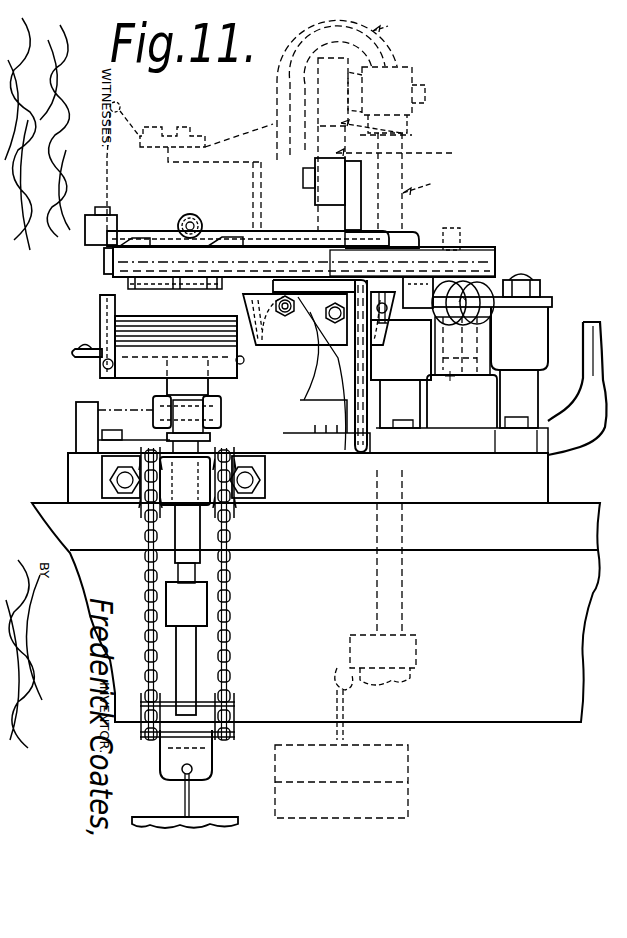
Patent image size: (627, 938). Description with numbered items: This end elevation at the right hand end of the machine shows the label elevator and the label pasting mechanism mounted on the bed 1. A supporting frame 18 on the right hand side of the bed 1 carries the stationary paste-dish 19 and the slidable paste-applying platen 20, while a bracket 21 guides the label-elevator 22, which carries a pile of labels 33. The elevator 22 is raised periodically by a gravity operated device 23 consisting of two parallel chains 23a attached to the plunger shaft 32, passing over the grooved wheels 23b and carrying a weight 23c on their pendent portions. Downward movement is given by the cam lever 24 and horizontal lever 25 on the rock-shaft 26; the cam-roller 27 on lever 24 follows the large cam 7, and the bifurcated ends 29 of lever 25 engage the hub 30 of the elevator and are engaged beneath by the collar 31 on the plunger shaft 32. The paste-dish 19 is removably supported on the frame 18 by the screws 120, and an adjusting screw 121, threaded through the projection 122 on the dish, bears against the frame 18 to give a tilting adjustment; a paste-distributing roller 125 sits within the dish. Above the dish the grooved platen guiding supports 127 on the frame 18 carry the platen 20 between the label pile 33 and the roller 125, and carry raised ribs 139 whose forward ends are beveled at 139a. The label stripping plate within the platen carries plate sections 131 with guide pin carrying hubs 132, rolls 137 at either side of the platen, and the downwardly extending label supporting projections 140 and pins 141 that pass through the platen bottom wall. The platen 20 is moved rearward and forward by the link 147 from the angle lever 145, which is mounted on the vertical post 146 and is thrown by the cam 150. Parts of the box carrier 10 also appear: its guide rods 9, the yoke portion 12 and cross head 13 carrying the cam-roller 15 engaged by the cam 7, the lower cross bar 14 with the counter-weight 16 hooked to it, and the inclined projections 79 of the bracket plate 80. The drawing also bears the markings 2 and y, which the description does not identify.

The bed 1 is at (308, 451).
The foundation slab 2 is at (558, 555).
The large cam 7 is at (403, 154).
The guide rods 9 is at (425, 188).
The box carrier 10 is at (282, 125).
The yoke portion 12 is at (392, 26).
The cross head portion 13 is at (400, 72).
The cross bar 14 is at (416, 648).
The cam-roller 15 is at (422, 128).
The counter-weight 16 is at (410, 770).
The supporting frame 18 is at (356, 392).
The paste-dish 19 is at (305, 342).
The paste-applying platen 20 is at (105, 258).
The bracket 21 is at (208, 622).
The label-elevator 22 is at (100, 362).
The gravity operated device 23 is at (234, 505).
The chains 23a is at (230, 652).
The grooved wheels 23b is at (236, 506).
The weight 23c is at (212, 817).
The cam lever 24 is at (353, 211).
The horizontally extending lever 25 is at (150, 410).
The rock-shaft 26 is at (165, 410).
The cam-roller 27 is at (328, 178).
The bifurcated ends 29 is at (222, 407).
The hub 30 is at (165, 388).
The collar 31 is at (210, 437).
The plunger shaft 32 is at (181, 518).
The pile of labels 33 is at (130, 335).
The inclined projections 79 is at (130, 118).
The bracket plate 80 is at (182, 128).
The screws 120 is at (304, 373).
The adjusting screw 121 is at (388, 314).
The projection 122 is at (388, 322).
The paste-distributing roller 125 is at (300, 335).
The grooved platen guiding supports 127 is at (495, 262).
The plate sections 131 is at (150, 243).
The guide pin carrying hubs 132 is at (235, 240).
The rolls 137 is at (190, 212).
The raised ribs 139 is at (306, 226).
The inclined forward end portions 139a is at (304, 264).
The label supporting projections 140 is at (166, 288).
The pins 141 is at (135, 290).
The angle lever 145 is at (472, 316).
The vertical stud or post 146 is at (522, 402).
The link 147 is at (412, 242).
The cam 150 is at (462, 372).
The reference point y is at (194, 287).